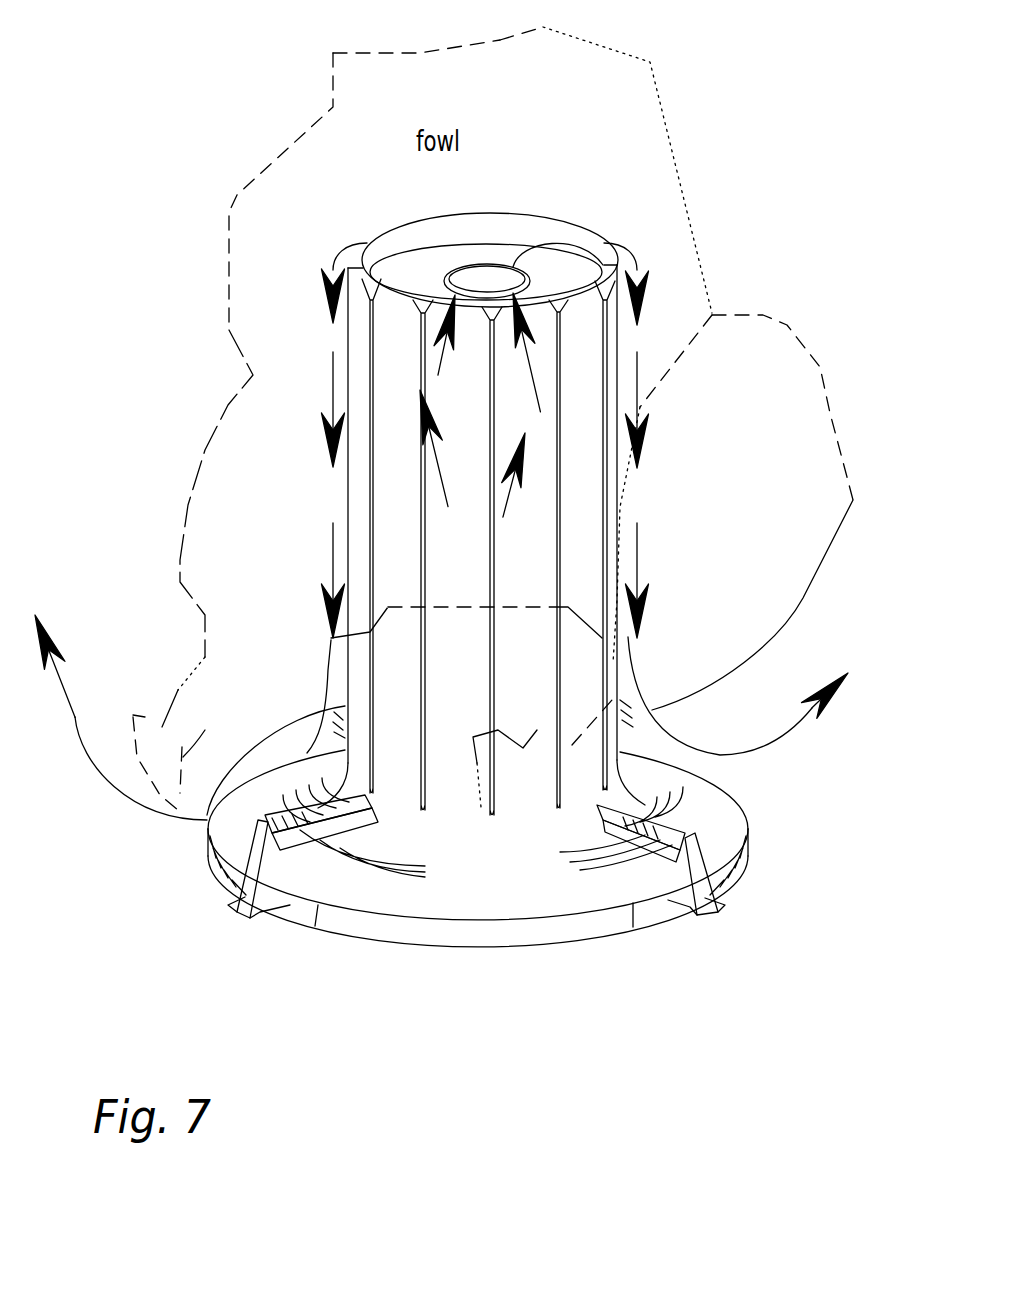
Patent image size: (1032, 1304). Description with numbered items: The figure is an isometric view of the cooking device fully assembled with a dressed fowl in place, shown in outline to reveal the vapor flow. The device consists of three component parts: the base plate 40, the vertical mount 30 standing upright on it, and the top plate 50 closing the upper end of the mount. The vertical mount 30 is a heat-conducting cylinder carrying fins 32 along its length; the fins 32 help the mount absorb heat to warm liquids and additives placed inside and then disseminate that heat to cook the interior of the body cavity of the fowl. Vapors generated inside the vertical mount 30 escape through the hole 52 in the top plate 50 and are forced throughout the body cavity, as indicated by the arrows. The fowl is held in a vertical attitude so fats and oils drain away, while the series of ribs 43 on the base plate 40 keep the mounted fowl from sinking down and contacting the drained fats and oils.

The vertical mount 30 is at (585, 480).
The fins 32 is at (558, 528).
The base plate 40 is at (707, 812).
The ribs 43 is at (695, 858).
The top plate 50 is at (493, 237).
The hole 52 is at (497, 282).